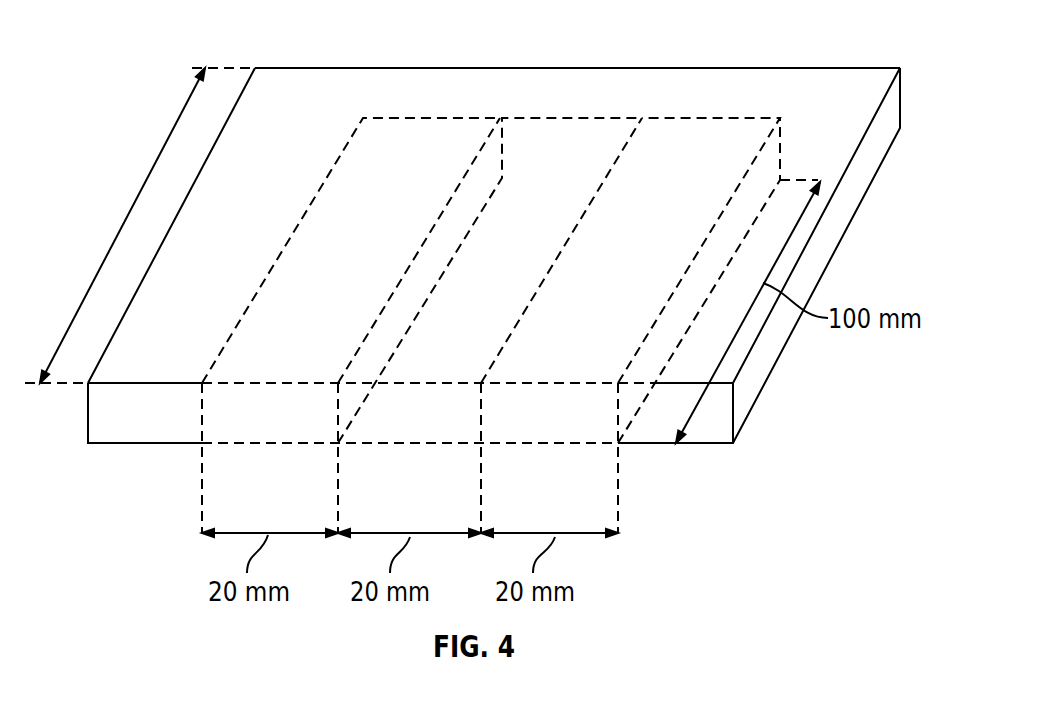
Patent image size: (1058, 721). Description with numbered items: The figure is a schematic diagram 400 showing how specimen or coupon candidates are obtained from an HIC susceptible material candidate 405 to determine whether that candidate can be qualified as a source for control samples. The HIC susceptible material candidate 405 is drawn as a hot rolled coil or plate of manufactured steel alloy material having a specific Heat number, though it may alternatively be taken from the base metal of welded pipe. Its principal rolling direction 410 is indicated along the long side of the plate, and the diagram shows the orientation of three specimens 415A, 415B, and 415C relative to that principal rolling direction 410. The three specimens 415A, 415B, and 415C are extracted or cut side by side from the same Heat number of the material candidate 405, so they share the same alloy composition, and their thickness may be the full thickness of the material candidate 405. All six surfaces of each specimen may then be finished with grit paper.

The schematic diagram 400 is at (257, 37).
The HIC susceptible material candidate 405 is at (824, 97).
The principal rolling direction 410 is at (134, 201).
The specimen 415A is at (298, 425).
The specimen 415B is at (443, 412).
The specimen 415C is at (592, 410).